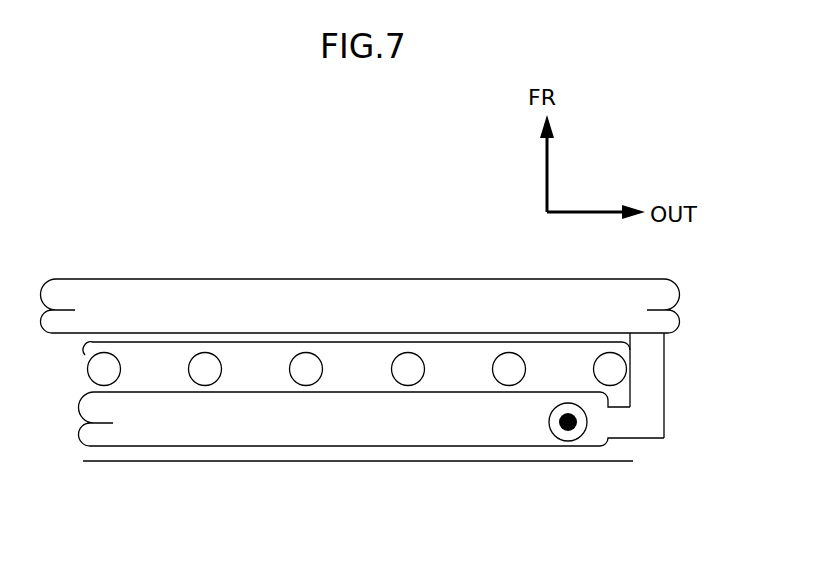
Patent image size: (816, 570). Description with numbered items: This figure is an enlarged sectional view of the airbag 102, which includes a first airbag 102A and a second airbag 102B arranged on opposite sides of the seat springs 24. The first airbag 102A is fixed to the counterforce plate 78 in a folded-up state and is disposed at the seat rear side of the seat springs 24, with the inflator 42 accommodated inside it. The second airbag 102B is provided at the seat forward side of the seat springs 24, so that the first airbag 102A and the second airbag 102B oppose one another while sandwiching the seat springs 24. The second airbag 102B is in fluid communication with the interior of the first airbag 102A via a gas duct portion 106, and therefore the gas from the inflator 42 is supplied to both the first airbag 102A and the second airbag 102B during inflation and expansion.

The airbag 102 is at (360, 376).
The second airbag 102B is at (277, 242).
The first airbag 102A is at (270, 446).
The seat springs 24 is at (367, 342).
The inflator 42 is at (572, 446).
The counterforce plate 78 is at (622, 460).
The gas duct portion 106 is at (664, 375).